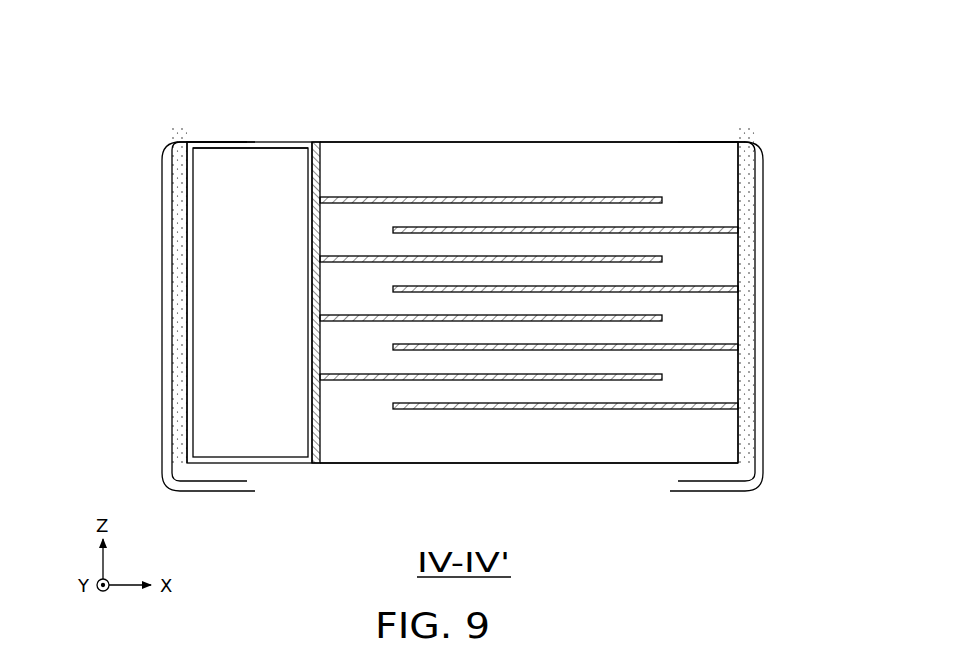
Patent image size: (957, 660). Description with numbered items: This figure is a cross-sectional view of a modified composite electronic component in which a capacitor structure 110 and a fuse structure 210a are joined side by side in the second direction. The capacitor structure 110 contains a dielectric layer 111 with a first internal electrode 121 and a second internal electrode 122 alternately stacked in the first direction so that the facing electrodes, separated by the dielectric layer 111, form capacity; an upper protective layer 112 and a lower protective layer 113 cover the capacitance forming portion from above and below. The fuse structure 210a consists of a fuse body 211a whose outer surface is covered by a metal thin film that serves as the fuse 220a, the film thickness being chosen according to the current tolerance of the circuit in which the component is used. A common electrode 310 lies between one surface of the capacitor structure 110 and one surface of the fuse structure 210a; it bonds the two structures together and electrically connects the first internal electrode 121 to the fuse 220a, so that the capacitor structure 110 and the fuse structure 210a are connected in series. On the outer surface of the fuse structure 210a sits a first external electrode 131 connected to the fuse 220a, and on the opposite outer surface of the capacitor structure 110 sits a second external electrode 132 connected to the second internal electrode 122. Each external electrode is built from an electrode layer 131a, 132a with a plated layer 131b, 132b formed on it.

The capacitor structure 110 is at (578, 138).
The dielectric layer 111 is at (525, 388).
The upper protective layer 112 is at (498, 160).
The lower protective layer 113 is at (592, 432).
The first internal electrode 121 is at (418, 381).
The second internal electrode 122 is at (458, 410).
The first external electrode 131 is at (149, 308).
The electrode layer 131a is at (176, 303).
The plated layer 131b is at (170, 365).
The second external electrode 132 is at (775, 308).
The electrode layer 132a is at (750, 300).
The plated layer 132b is at (760, 360).
The fuse structure 210a is at (305, 138).
The fuse body 211a is at (222, 250).
The fuse 220a is at (232, 150).
The common electrode 310 is at (321, 180).